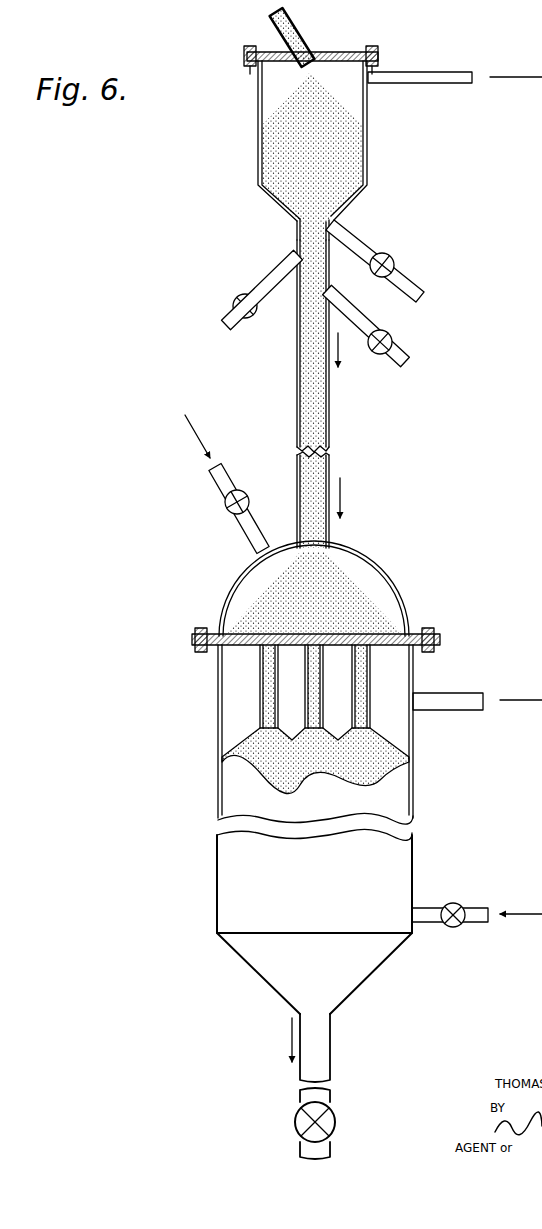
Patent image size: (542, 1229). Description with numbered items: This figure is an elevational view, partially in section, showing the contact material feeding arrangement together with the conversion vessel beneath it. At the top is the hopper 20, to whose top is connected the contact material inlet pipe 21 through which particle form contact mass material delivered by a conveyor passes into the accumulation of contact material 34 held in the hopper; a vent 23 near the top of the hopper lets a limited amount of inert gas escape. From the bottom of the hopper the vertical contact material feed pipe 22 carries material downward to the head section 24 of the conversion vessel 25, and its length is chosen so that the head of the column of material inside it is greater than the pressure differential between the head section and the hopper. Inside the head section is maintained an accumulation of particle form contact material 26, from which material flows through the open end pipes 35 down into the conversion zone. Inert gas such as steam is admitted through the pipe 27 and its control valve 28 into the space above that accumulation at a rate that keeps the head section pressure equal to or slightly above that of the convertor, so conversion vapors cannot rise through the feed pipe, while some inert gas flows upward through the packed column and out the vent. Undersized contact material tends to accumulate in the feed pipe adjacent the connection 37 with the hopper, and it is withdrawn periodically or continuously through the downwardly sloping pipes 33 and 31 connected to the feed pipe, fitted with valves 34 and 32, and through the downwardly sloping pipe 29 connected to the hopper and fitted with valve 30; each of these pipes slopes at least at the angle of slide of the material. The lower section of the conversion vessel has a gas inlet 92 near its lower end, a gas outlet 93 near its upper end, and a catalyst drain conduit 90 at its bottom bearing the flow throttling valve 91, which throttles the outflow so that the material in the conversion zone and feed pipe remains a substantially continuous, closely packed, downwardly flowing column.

The hopper 20 is at (295, 133).
The contact material inlet pipe 21 is at (310, 37).
The contact material feed pipe 22 is at (297, 385).
The vent 23 is at (455, 96).
The head section 24 is at (323, 596).
The conversion vessel 25 is at (292, 829).
The accumulation of particle form contact material 26 is at (287, 592).
The pipe 27 is at (227, 484).
The valve 28 is at (217, 508).
The downwardly sloping pipe 29 is at (386, 261).
The valve 30 is at (396, 257).
The downwardly sloping pipe 31 is at (379, 334).
The valve 32 is at (399, 340).
The downwardly sloping pipe 33 is at (243, 291).
The accumulation of contact material 34 is at (309, 197).
The open end pipes 35 is at (315, 719).
The connection 37 is at (280, 229).
The catalyst drain conduit 90 is at (332, 1048).
The flow throttling valve 91 is at (337, 1123).
The gas inlet 92 is at (477, 896).
The gas outlet 93 is at (477, 723).